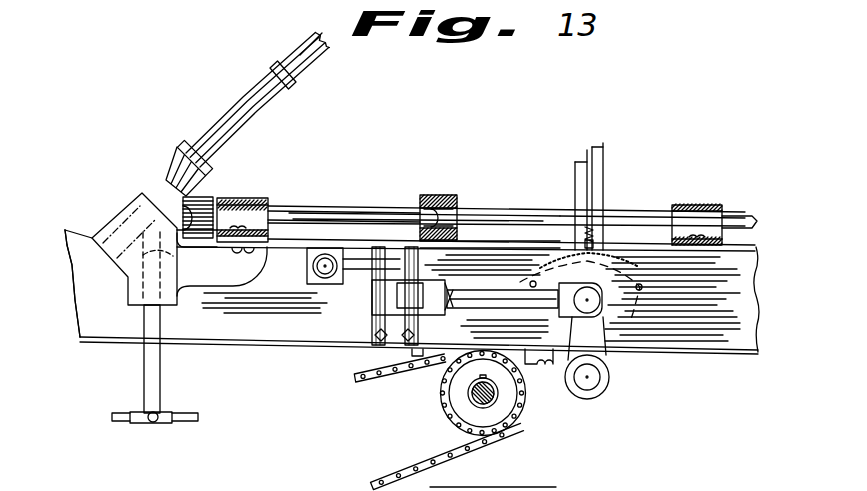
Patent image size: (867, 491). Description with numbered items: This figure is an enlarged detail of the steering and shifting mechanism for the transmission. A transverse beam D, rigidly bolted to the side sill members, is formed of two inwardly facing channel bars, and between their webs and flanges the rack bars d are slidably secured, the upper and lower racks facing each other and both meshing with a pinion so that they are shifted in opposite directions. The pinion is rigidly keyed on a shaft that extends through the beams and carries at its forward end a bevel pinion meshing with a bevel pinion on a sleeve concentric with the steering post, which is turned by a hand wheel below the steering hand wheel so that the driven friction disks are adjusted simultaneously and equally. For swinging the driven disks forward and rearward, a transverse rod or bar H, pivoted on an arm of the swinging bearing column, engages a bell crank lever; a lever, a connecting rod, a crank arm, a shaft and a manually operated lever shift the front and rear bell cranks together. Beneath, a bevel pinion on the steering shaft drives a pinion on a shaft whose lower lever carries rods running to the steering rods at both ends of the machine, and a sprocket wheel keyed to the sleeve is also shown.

The transverse beam D is at (455, 210).
The rack bar d is at (439, 210).
The rod or bar H is at (310, 283).